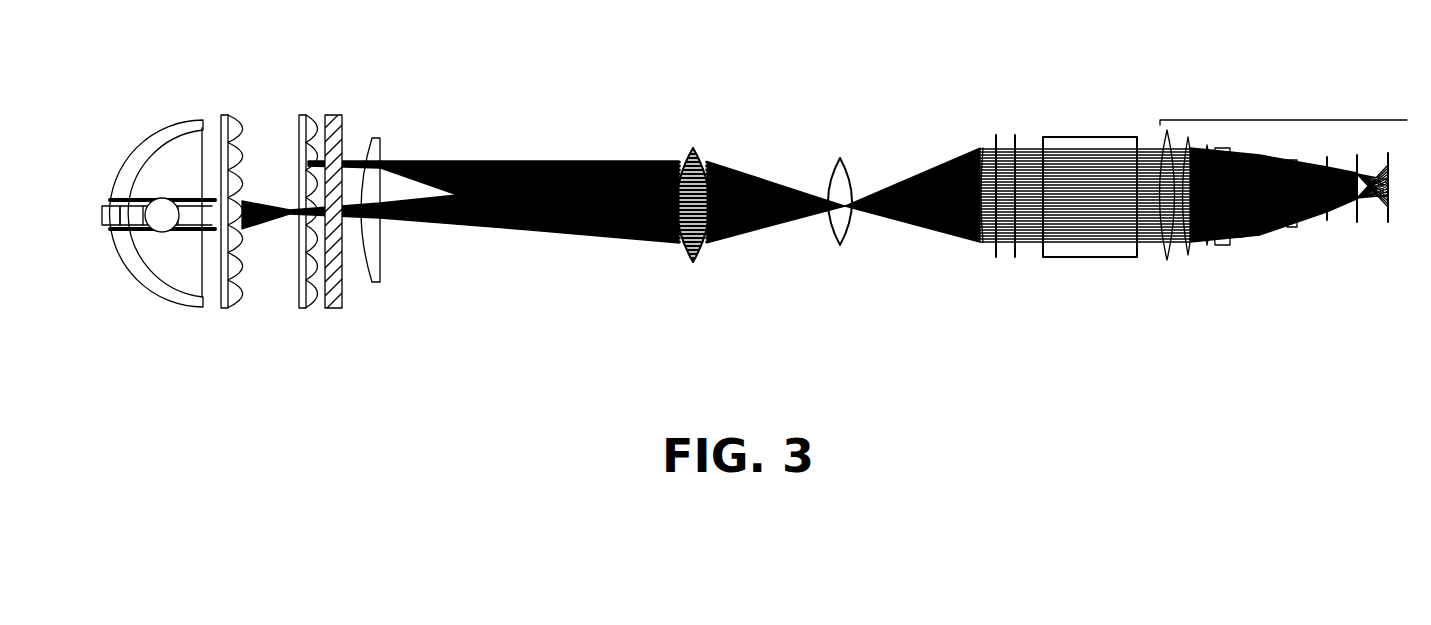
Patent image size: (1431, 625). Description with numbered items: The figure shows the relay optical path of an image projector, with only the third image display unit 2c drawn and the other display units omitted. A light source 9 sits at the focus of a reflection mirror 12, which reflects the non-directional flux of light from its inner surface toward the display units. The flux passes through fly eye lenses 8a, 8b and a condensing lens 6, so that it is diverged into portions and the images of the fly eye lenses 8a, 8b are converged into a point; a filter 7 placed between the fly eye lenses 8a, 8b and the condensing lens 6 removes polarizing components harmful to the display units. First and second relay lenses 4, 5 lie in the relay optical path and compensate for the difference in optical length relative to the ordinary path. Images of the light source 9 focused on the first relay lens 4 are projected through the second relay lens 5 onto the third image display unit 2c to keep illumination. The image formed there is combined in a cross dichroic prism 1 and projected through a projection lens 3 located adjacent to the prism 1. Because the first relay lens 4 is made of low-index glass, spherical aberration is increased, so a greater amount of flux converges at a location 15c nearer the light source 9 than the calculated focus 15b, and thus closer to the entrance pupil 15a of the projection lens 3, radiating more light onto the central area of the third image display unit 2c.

The cross dichroic prism 1 is at (1098, 137).
The third image display unit 2c is at (1015, 135).
The projection lens 3 is at (1202, 120).
The first relay lens 4 is at (693, 148).
The second relay lens 5 is at (838, 158).
The condensing lens 6 is at (381, 144).
The filter 7 is at (332, 115).
The fly eye lens 8a is at (226, 308).
The fly eye lens 8b is at (302, 308).
The light source 9 is at (161, 198).
The reflection mirror 12 is at (160, 303).
The entrance pupil 15a is at (1327, 221).
The calculated focus 15b is at (1388, 223).
The convergence location 15c is at (1357, 223).